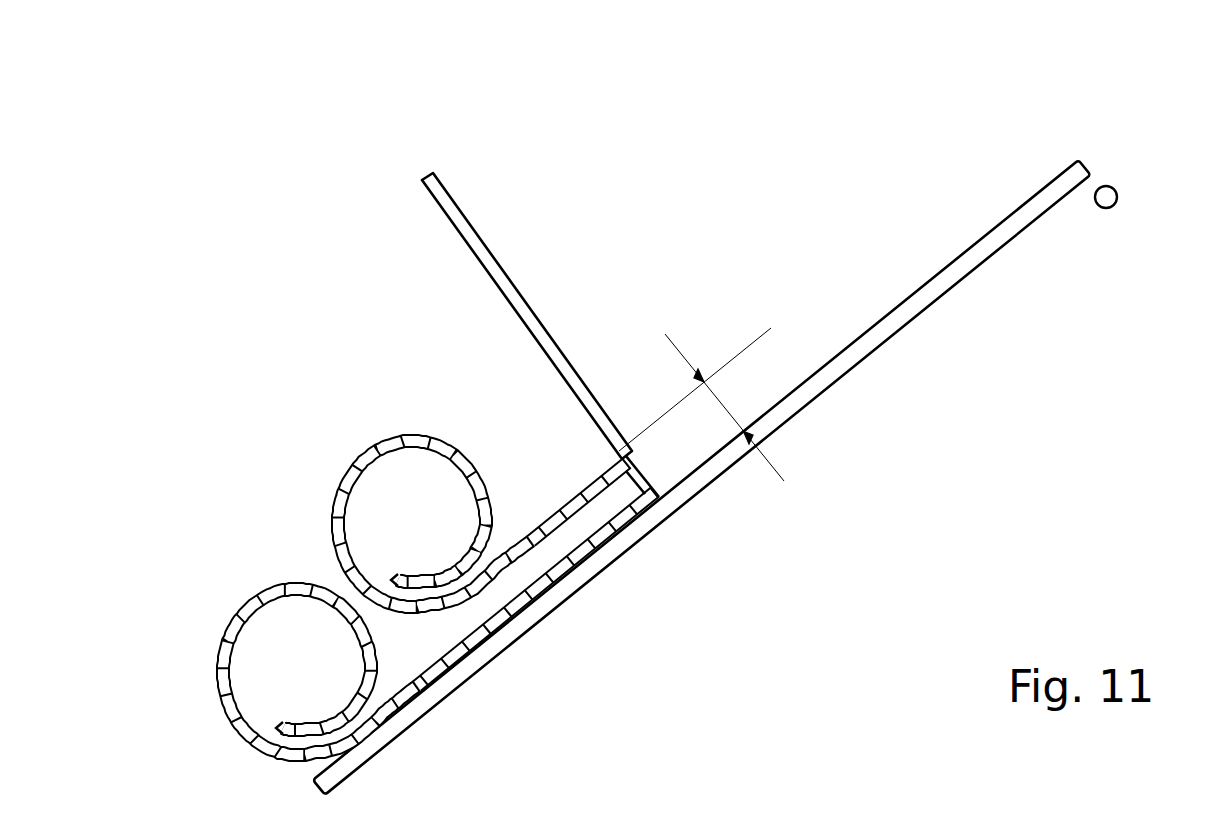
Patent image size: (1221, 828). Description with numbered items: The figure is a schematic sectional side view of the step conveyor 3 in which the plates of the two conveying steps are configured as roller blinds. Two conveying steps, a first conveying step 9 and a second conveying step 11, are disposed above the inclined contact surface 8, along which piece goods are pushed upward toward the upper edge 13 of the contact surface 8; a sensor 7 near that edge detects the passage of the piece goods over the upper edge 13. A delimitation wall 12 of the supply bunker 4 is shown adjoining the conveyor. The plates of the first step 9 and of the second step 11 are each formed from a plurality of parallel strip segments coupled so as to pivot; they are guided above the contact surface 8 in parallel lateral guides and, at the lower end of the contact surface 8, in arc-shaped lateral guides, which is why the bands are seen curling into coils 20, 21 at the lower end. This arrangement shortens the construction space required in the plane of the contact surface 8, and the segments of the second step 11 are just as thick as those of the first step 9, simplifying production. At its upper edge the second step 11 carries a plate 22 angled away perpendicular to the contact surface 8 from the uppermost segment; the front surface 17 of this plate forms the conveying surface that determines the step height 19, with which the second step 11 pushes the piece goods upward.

The step conveyor 3 is at (782, 590).
The supply bunker 4 is at (647, 190).
The sensor 7 is at (1114, 186).
The contact surface 8 is at (1030, 198).
The first conveying step 9 is at (480, 645).
The second conveying step 11 is at (569, 512).
The delimitation wall 12 is at (500, 294).
The upper edge 13 is at (1081, 148).
The conveying front surface 17 is at (652, 472).
The step height 19 is at (687, 361).
The first coil 20 is at (252, 598).
The second coil 21 is at (365, 452).
The plate 22 is at (614, 448).